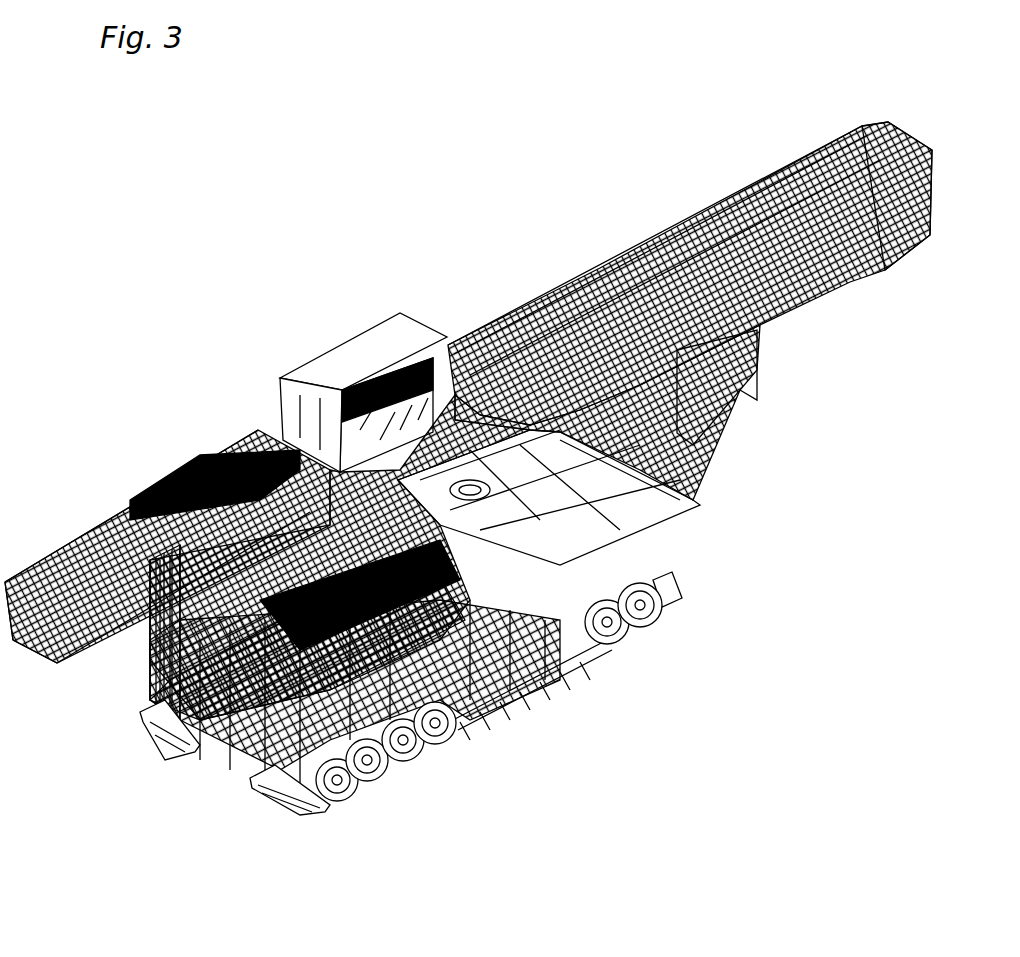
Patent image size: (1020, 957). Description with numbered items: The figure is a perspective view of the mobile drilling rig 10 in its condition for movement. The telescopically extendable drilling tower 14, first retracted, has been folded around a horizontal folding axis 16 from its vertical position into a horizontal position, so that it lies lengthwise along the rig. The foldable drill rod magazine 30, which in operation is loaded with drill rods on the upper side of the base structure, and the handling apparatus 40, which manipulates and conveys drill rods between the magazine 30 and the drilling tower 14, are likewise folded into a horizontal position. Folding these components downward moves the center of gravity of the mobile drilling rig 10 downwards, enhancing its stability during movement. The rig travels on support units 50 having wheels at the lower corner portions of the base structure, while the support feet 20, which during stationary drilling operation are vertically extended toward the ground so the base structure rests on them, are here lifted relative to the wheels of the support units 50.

The drilling rig 10 is at (522, 118).
The drilling tower 14 is at (683, 225).
The horizontal folding axis 16 is at (487, 380).
The support feet 20 is at (673, 595).
The drill rod magazine 30 is at (105, 520).
The handling apparatus 40 is at (147, 653).
The support units 50 is at (367, 782).